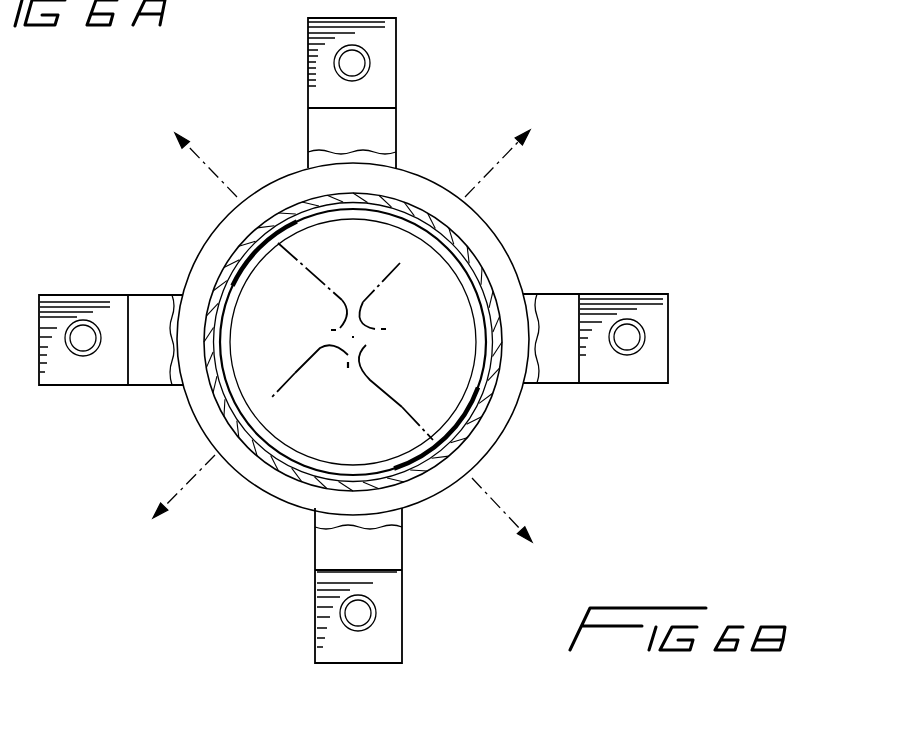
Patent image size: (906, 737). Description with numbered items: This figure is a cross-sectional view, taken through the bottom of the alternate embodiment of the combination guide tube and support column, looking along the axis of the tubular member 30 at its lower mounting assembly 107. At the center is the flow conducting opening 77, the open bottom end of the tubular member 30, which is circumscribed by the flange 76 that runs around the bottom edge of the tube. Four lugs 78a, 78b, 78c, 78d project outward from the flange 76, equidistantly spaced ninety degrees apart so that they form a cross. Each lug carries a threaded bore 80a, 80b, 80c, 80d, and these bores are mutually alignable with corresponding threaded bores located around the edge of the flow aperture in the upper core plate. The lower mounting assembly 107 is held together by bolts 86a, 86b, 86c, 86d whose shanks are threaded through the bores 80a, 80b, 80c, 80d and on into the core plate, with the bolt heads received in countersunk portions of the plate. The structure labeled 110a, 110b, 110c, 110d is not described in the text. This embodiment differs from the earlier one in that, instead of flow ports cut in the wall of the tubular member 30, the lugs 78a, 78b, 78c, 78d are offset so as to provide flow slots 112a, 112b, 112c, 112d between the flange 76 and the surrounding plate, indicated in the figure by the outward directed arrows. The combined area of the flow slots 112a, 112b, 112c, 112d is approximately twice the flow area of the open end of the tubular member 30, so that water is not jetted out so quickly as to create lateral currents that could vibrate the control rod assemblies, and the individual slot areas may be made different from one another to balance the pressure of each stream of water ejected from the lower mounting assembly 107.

The tubular member 30 is at (480, 413).
The flange 76 is at (497, 255).
The flow conducting opening 77 is at (370, 266).
The lug 78a is at (57, 375).
The lug 78b is at (392, 637).
The lug 78c is at (655, 337).
The lug 78d is at (388, 42).
The threaded bore 80a is at (88, 350).
The threaded bore 80b is at (372, 606).
The threaded bore 80c is at (632, 331).
The threaded bore 80d is at (350, 52).
The bolt 86a is at (83, 330).
The bolt 86b is at (355, 625).
The bolt 86c is at (632, 345).
The bolt 86d is at (366, 68).
The lower mounting assembly 107 is at (166, 263).
The arm 110a is at (150, 365).
The arm 110b is at (318, 539).
The arm 110c is at (560, 320).
The arm 110d is at (390, 128).
The flow slot 112a is at (228, 470).
The flow slot 112b is at (483, 468).
The flow slot 112c is at (485, 218).
The flow slot 112d is at (292, 162).